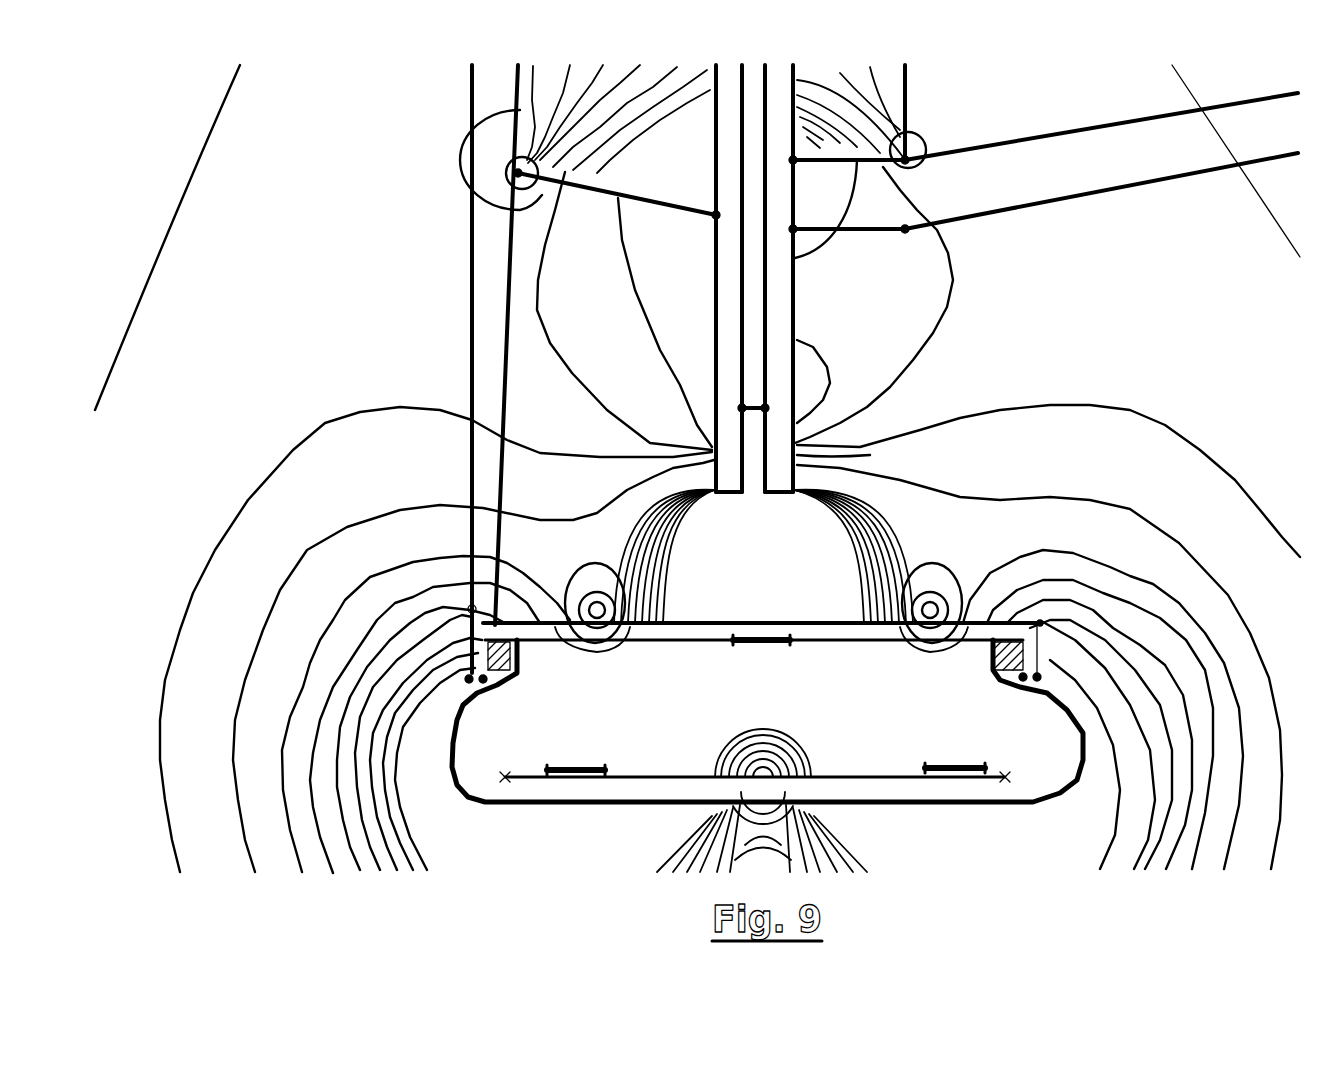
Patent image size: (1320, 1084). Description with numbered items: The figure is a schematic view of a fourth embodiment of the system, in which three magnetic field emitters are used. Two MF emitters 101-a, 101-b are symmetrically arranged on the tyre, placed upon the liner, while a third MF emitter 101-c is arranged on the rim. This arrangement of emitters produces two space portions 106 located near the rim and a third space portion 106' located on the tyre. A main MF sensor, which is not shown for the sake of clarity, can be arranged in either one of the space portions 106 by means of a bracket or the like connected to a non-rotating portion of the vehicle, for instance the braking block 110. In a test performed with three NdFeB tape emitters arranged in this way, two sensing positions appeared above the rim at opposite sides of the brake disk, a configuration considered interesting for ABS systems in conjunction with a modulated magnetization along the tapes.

The braking block 110 is at (796, 297).
The space portion 106 is at (756, 571).
The third space portion 106' is at (763, 800).
The MF emitter 101-a is at (578, 768).
The MF emitter 101-b is at (948, 764).
The third MF emitter 101-c is at (765, 648).